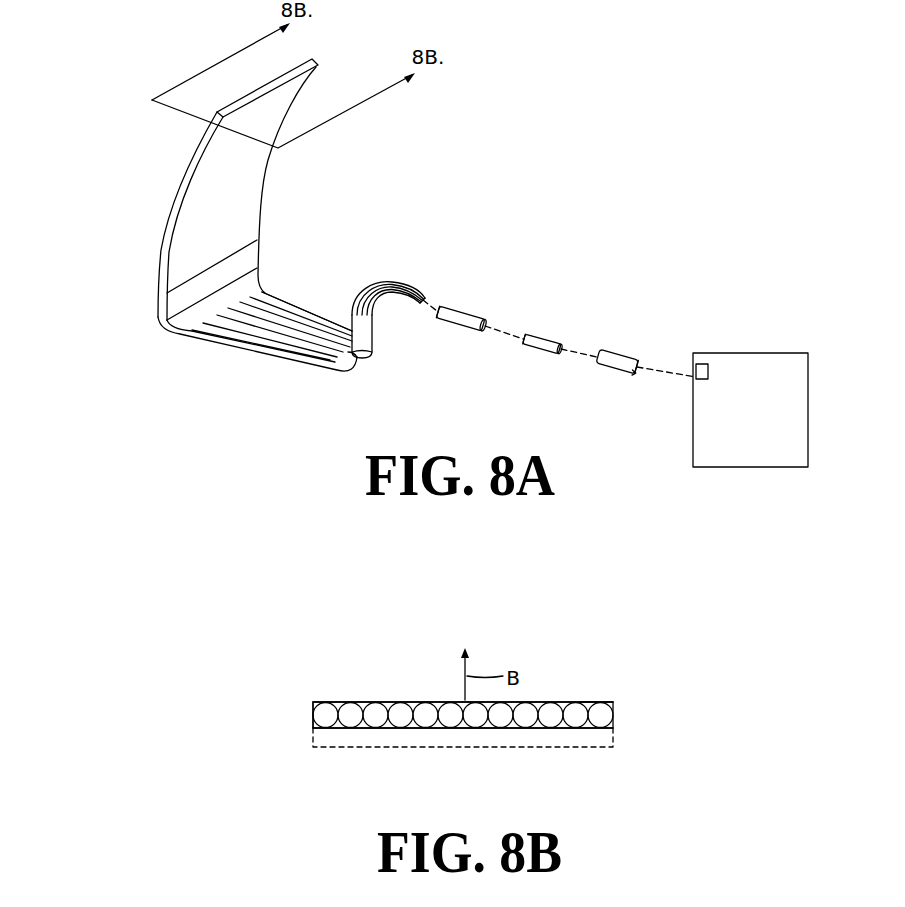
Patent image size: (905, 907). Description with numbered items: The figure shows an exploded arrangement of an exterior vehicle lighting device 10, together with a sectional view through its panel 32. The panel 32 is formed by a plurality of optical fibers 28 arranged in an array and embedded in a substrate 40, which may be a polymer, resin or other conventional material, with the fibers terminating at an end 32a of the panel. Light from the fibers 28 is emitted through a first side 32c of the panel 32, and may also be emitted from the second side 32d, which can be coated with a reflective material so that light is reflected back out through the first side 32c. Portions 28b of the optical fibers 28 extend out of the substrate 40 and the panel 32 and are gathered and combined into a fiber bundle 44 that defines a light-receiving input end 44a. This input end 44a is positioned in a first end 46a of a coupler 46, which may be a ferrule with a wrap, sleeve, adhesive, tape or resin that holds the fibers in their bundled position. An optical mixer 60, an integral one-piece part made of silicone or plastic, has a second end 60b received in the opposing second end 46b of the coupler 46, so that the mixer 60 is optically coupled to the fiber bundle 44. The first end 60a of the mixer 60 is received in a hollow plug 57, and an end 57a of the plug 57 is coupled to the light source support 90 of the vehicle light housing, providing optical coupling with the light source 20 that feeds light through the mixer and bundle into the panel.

In FIG. 8A, the vehicle lighting device 10 is at (556, 236).
In FIG. 8A, the light source 20 is at (694, 379).
In FIG. 8A, the optical fibers 28 is at (372, 292).
In FIG. 8B, the optical fibers 28 is at (423, 723).
In FIG. 8A, the portions of the optical fibers 28b is at (303, 335).
In FIG. 8A, the panel 32 is at (158, 174).
In FIG. 8B, the panel 32 is at (610, 740).
In FIG. 8B, the end of the panel 32a is at (313, 714).
In FIG. 8A, the first side of the panel 32c is at (156, 241).
In FIG. 8B, the first side of the panel 32c is at (437, 702).
In FIG. 8A, the second side of the panel 32d is at (236, 219).
In FIG. 8B, the second side of the panel 32d is at (438, 728).
In FIG. 8B, the substrate 40 is at (565, 702).
In FIG. 8A, the fiber bundle 44 is at (405, 282).
In FIG. 8A, the input end of the fiber bundle 44a is at (418, 307).
In FIG. 8A, the coupler 46 is at (455, 323).
In FIG. 8A, the first end of the coupler 46a is at (440, 302).
In FIG. 8A, the second end of the coupler 46b is at (485, 333).
In FIG. 8A, the hollow plug 57 is at (620, 352).
In FIG. 8A, the end of the plug 57a is at (636, 364).
In FIG. 8A, the optical mixer 60 is at (542, 350).
In FIG. 8A, the first end of the optical mixer 60a is at (562, 347).
In FIG. 8A, the second end of the optical mixer 60b is at (524, 336).
In FIG. 8A, the light source support 90 is at (753, 353).